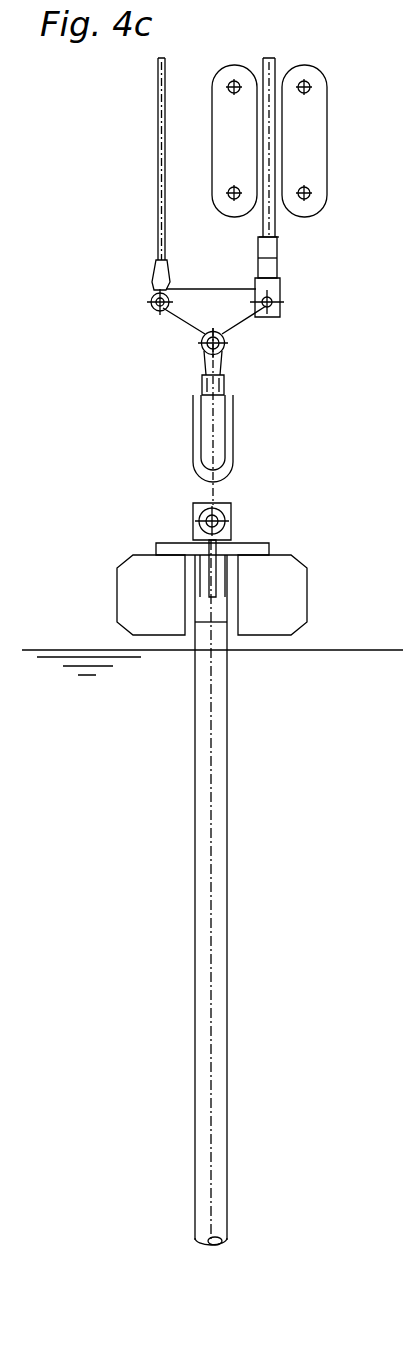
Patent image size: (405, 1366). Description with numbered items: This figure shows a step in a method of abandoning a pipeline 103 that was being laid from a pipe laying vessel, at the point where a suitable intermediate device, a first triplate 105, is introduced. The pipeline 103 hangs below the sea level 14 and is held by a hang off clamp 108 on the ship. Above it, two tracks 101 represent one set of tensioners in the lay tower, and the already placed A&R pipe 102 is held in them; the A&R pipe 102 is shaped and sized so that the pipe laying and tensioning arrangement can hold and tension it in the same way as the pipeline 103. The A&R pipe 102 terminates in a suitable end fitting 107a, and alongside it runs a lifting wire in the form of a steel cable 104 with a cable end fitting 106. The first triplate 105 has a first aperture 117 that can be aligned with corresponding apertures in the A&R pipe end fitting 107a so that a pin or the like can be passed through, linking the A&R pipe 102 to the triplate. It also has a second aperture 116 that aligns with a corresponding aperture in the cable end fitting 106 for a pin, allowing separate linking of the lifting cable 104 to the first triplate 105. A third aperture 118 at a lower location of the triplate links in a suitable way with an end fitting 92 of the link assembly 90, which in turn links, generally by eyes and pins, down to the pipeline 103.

The tracks 101 is at (305, 140).
The A&R pipe 102 is at (268, 215).
The steel cable 104 is at (158, 235).
The cable end fitting 106 is at (155, 272).
The second aperture 116 is at (160, 302).
The first triplate 105 is at (185, 325).
The third aperture 118 is at (205, 356).
The end fitting 107a is at (267, 269).
The first aperture 117 is at (267, 302).
The end fitting 92 is at (223, 377).
The link assembly 90 is at (228, 438).
The hang off clamp 108 is at (132, 583).
The sea level 14 is at (270, 650).
The pipeline 103 is at (218, 1163).